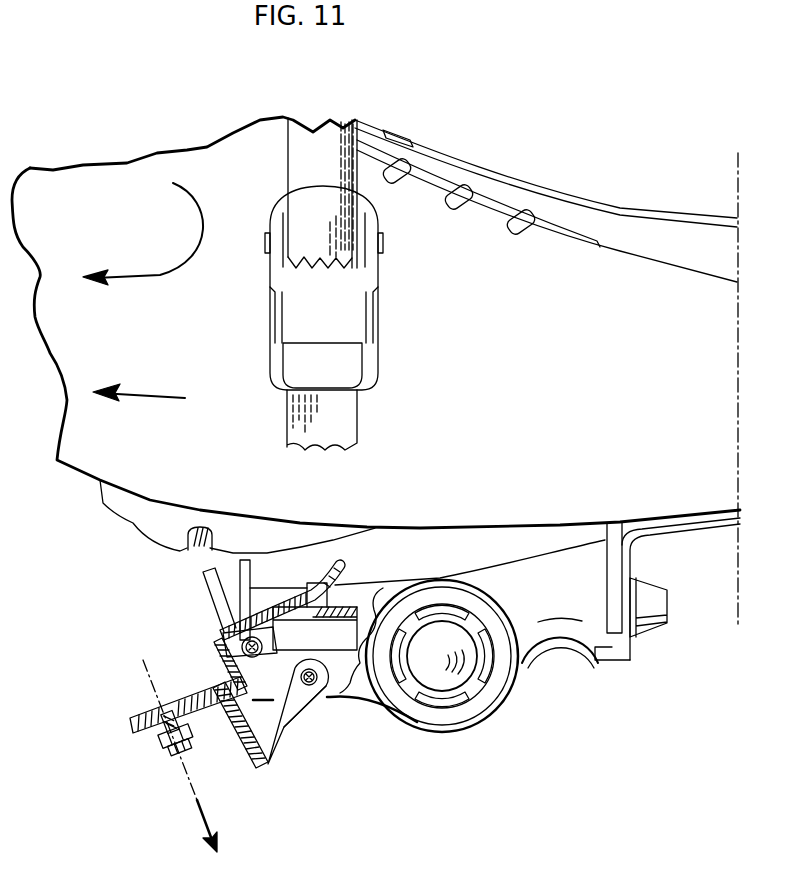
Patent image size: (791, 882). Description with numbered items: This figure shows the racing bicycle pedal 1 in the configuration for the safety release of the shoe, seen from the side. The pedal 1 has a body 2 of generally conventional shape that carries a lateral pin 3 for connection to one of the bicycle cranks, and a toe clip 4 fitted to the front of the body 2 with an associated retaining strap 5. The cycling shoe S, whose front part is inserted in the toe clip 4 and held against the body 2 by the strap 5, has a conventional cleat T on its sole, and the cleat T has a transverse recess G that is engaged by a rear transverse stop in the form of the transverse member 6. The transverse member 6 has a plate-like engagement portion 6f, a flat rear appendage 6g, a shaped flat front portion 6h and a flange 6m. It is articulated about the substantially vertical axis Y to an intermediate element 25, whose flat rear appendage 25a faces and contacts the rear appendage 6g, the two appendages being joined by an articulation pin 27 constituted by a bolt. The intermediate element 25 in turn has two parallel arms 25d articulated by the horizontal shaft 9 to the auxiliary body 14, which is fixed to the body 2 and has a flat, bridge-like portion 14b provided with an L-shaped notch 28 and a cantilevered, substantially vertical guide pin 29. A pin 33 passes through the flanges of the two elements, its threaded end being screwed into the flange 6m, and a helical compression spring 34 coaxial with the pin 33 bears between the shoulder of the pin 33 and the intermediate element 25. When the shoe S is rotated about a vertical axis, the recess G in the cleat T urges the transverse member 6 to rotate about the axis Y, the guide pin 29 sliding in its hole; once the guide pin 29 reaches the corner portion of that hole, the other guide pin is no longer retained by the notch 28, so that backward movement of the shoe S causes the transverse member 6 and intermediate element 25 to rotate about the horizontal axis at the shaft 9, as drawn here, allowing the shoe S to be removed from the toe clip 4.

The racing bicycle pedal 1 is at (585, 677).
The body 2 is at (556, 638).
The lateral pin 3 is at (430, 670).
The toe clip 4 is at (607, 200).
The retaining strap 5 is at (297, 168).
The transverse member 6 is at (236, 608).
The plate-like engagement portion 6f is at (207, 580).
The flat rear appendage 6g is at (205, 703).
The shaped flat front portion 6h is at (277, 613).
The flange 6m is at (220, 660).
The horizontal shaft 9 is at (310, 687).
The auxiliary body 14 is at (243, 593).
The flat bridge-like portion 14b is at (337, 703).
The intermediate element 25 is at (277, 752).
The flat rear appendage 25a is at (210, 703).
The parallel arms 25d is at (287, 723).
The articulation pin 27 is at (147, 737).
The L-shaped notch 28 is at (307, 613).
The guide pin 29 is at (320, 582).
The pin 33 is at (255, 657).
The helical compression spring 34 is at (253, 637).
The cycling shoe S is at (480, 215).
The cleat T is at (230, 523).
The transverse recess G is at (222, 533).
The axis Y— Y is at (143, 670).